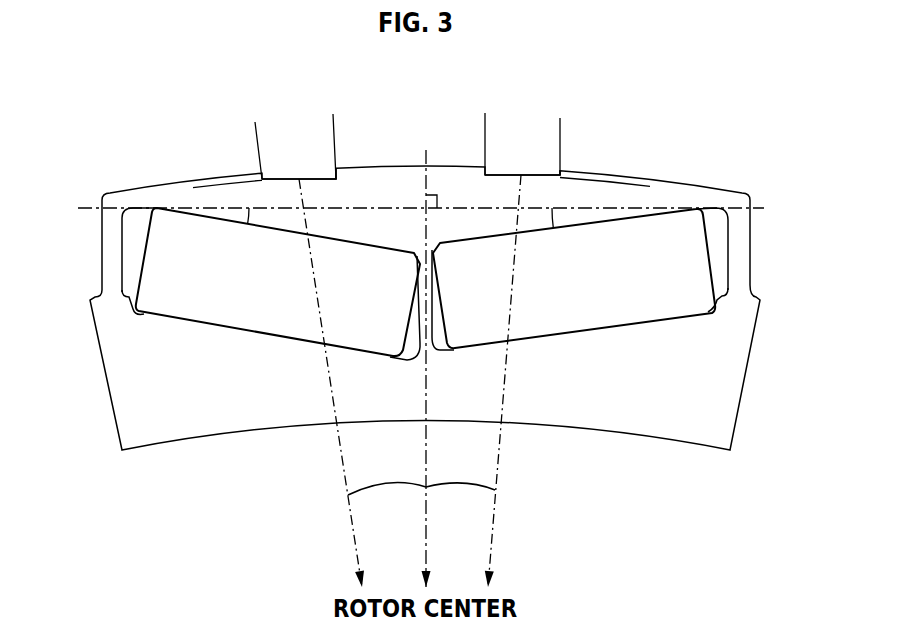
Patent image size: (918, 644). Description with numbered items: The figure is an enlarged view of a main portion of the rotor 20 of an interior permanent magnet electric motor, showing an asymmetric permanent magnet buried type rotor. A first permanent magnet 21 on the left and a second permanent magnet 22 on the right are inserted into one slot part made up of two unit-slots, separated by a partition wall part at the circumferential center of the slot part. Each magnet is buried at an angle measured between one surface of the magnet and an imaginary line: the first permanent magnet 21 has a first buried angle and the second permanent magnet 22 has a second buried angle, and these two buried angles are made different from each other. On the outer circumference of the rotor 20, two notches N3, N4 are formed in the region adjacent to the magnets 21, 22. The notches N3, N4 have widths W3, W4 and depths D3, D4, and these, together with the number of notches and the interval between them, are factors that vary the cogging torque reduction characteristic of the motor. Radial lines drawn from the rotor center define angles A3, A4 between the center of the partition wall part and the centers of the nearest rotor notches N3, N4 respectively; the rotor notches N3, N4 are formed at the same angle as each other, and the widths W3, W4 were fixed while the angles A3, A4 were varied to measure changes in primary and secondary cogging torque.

The rotor 20 is at (645, 413).
The first permanent magnet 21 is at (157, 261).
The second permanent magnet 22 is at (685, 256).
The rotor notch N3 is at (313, 178).
The rotor notch N4 is at (533, 175).
The width of rotor notch W3 is at (333, 119).
The width of rotor notch W4 is at (560, 123).
The depth of rotor notch D3 is at (197, 187).
The depth of rotor notch D4 is at (623, 184).
The angle A3 is at (387, 477).
The angle A4 is at (460, 474).